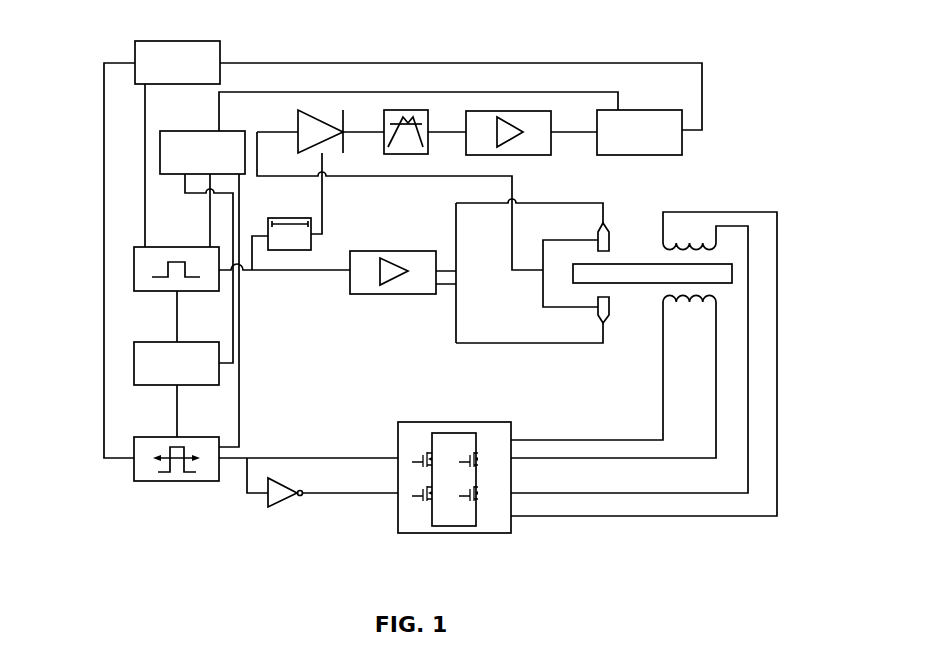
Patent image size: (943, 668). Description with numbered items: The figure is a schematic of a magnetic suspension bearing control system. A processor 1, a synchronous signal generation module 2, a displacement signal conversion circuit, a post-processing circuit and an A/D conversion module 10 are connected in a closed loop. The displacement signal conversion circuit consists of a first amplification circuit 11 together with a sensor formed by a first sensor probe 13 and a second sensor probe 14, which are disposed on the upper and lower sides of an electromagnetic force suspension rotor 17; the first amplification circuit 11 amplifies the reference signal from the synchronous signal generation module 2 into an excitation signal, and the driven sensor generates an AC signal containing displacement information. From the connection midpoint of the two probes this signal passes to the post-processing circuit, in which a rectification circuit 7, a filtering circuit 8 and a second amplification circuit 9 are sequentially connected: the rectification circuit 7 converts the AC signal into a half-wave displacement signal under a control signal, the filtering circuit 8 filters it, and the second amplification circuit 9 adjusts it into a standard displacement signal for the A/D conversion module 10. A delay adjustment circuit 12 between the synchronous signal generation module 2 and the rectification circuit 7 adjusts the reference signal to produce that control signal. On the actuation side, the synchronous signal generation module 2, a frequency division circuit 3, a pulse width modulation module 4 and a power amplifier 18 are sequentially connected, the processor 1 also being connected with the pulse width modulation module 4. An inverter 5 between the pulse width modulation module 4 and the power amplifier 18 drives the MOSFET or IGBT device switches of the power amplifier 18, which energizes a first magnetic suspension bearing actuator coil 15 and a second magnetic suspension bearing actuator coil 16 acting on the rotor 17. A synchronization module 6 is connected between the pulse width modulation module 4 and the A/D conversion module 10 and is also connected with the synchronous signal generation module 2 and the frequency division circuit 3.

The processor 1 is at (128, 77).
The synchronous signal generation module 2 is at (130, 268).
The frequency division circuit 3 is at (123, 358).
The Pulse Width Modulation module 4 is at (122, 475).
The inverter 5 is at (277, 515).
The synchronization module 6 is at (227, 130).
The rectification circuit 7 is at (323, 111).
The filtering circuit 8 is at (427, 110).
The second amplification circuit 9 is at (553, 115).
The A/D conversion module 10 is at (683, 145).
The first amplification circuit 11 is at (373, 245).
The delay adjustment circuit 12 is at (283, 260).
The first sensor probe 13 is at (613, 236).
The second sensor probe 14 is at (616, 315).
The first magnetic suspension bearing actuator coil 15 is at (723, 241).
The second magnetic suspension bearing actuator coil 16 is at (727, 305).
The electromagnetic force suspension rotor 17 is at (733, 270).
The power amplifier 18 is at (500, 533).